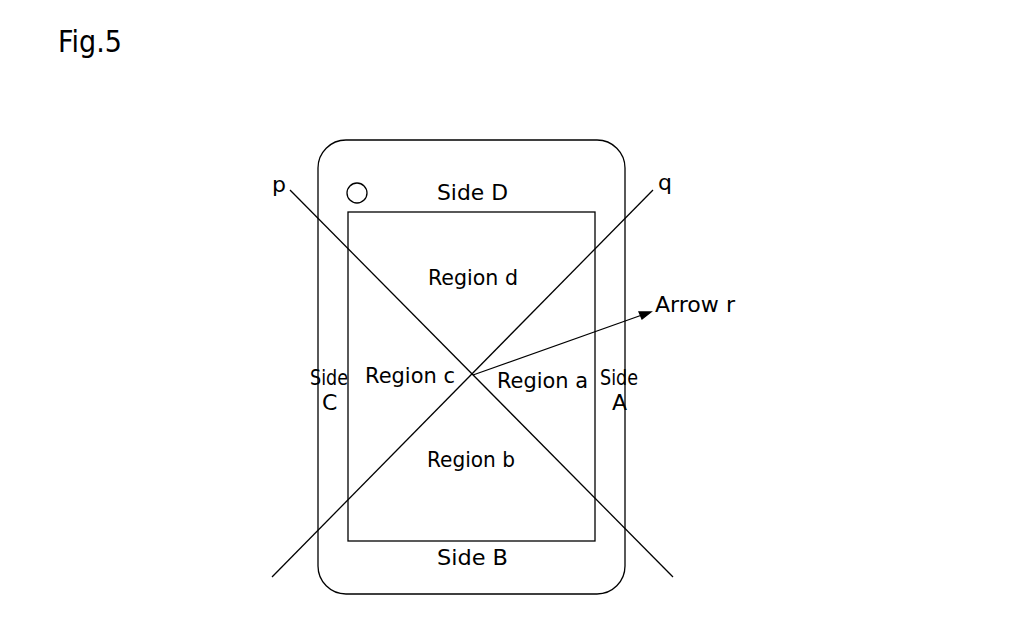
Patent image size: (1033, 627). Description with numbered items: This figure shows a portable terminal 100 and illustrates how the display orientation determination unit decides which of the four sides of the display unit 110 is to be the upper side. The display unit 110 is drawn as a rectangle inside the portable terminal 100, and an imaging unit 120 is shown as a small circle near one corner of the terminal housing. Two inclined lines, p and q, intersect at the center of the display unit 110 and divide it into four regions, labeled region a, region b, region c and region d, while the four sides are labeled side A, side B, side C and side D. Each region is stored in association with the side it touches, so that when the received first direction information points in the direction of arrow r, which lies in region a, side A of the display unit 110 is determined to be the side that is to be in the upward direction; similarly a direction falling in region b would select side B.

The portable terminal 100 is at (460, 140).
The display unit 110 is at (596, 307).
The imaging unit 120 is at (375, 125).